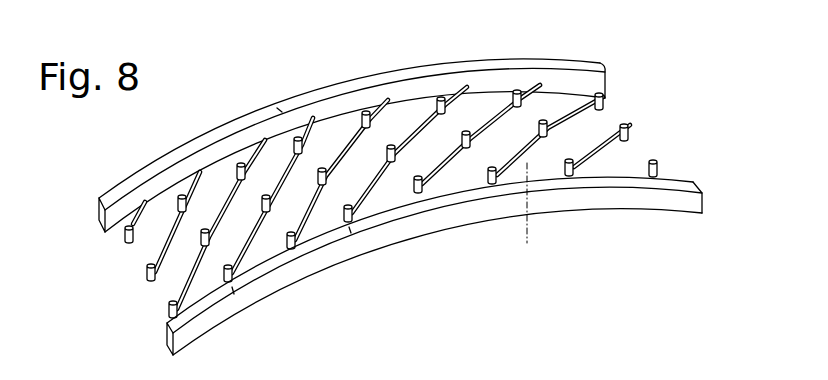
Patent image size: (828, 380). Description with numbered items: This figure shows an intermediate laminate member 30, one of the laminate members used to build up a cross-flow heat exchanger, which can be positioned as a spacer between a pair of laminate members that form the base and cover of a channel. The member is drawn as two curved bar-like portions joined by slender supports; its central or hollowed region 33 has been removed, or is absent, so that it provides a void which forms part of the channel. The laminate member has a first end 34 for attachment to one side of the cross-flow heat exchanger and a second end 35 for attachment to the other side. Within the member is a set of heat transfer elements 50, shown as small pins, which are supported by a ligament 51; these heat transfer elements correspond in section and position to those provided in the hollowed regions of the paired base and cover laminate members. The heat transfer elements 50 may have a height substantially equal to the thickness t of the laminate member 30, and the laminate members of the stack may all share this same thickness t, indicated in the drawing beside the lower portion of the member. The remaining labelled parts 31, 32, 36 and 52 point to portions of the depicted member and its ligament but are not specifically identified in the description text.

The intermediate laminate member 30 is at (434, 266).
The front face of lower beam 31 is at (378, 238).
The upper support beam 32 is at (354, 137).
The hollowed region 33 is at (620, 115).
The first end 34 is at (606, 77).
The second end 35 is at (99, 213).
The left end of lower beam 36 is at (182, 337).
The heat transfer elements 50 is at (240, 165).
The ligament 51 is at (368, 165).
The blade edge 52 is at (486, 112).
The thickness t is at (526, 200).